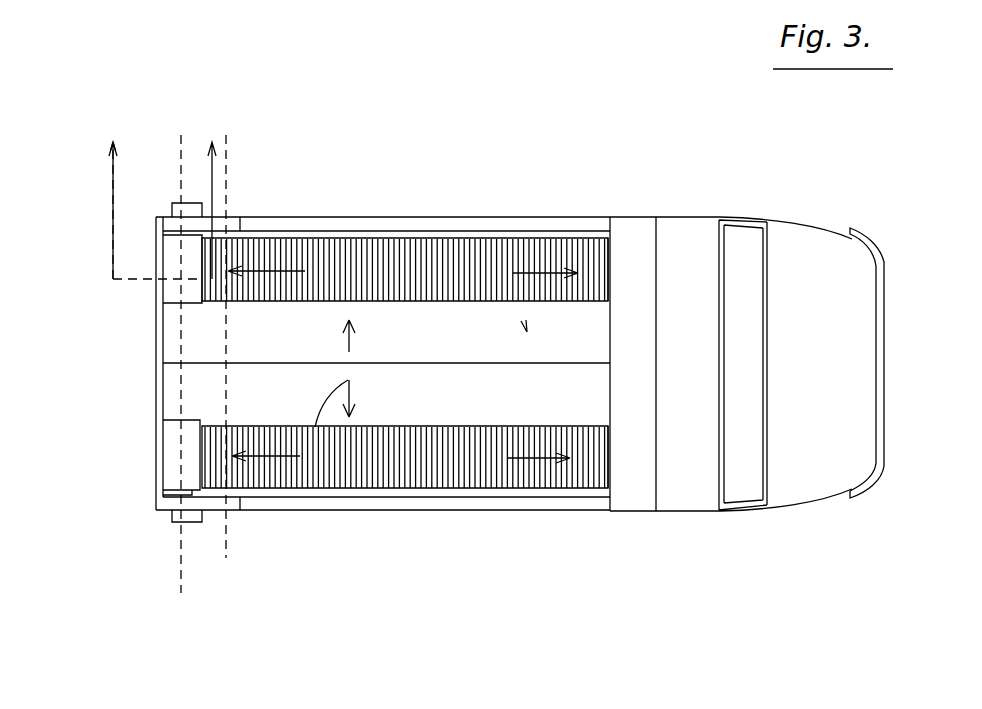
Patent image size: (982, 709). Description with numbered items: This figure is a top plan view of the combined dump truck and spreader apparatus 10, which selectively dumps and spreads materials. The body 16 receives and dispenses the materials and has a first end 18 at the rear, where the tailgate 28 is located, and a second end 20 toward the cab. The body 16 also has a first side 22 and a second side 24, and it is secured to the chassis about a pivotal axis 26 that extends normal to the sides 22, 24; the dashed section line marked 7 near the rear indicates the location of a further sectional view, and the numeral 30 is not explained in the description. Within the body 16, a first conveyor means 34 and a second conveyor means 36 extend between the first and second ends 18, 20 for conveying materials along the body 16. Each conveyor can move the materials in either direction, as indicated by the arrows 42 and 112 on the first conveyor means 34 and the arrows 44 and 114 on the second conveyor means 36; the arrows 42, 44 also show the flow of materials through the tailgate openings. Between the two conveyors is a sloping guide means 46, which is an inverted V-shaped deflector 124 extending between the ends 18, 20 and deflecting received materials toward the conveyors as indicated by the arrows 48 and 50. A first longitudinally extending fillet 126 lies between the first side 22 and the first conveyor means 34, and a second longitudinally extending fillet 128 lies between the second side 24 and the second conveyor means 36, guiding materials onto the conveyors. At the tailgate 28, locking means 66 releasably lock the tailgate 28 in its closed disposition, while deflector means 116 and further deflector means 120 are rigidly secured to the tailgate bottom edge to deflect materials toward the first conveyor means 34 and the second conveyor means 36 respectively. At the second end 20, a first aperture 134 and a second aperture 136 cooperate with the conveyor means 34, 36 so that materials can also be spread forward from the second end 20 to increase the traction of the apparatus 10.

The combined dump truck and spreader apparatus 10 is at (560, 99).
The body 16 is at (593, 378).
The first end 18 is at (155, 216).
The second end 20 is at (610, 228).
The first side 22 is at (410, 218).
The second side 24 is at (363, 508).
The pivotal axis 26 is at (226, 532).
The tailgate 28 is at (157, 337).
The section line 30 is at (182, 555).
The first conveyor means 34 is at (465, 268).
The second conveyor means 36 is at (478, 480).
The arrow 42 is at (272, 245).
The arrow 44 is at (267, 457).
The sloping guide means 46 is at (527, 332).
The arrow 48 is at (347, 345).
The arrow 50 is at (317, 433).
The locking means 66 is at (157, 508).
The section view line 7- 7 is at (163, 196).
The arrow 112 is at (545, 273).
The arrow 114 is at (537, 480).
The deflector means 116 is at (172, 262).
The further deflector means 120 is at (175, 472).
The inverted V-shaped deflector 124 is at (498, 351).
The first longitudinally extending fillet 126 is at (368, 240).
The second longitudinally extending fillet 128 is at (417, 493).
The first aperture 134 is at (610, 253).
The second aperture 136 is at (613, 488).